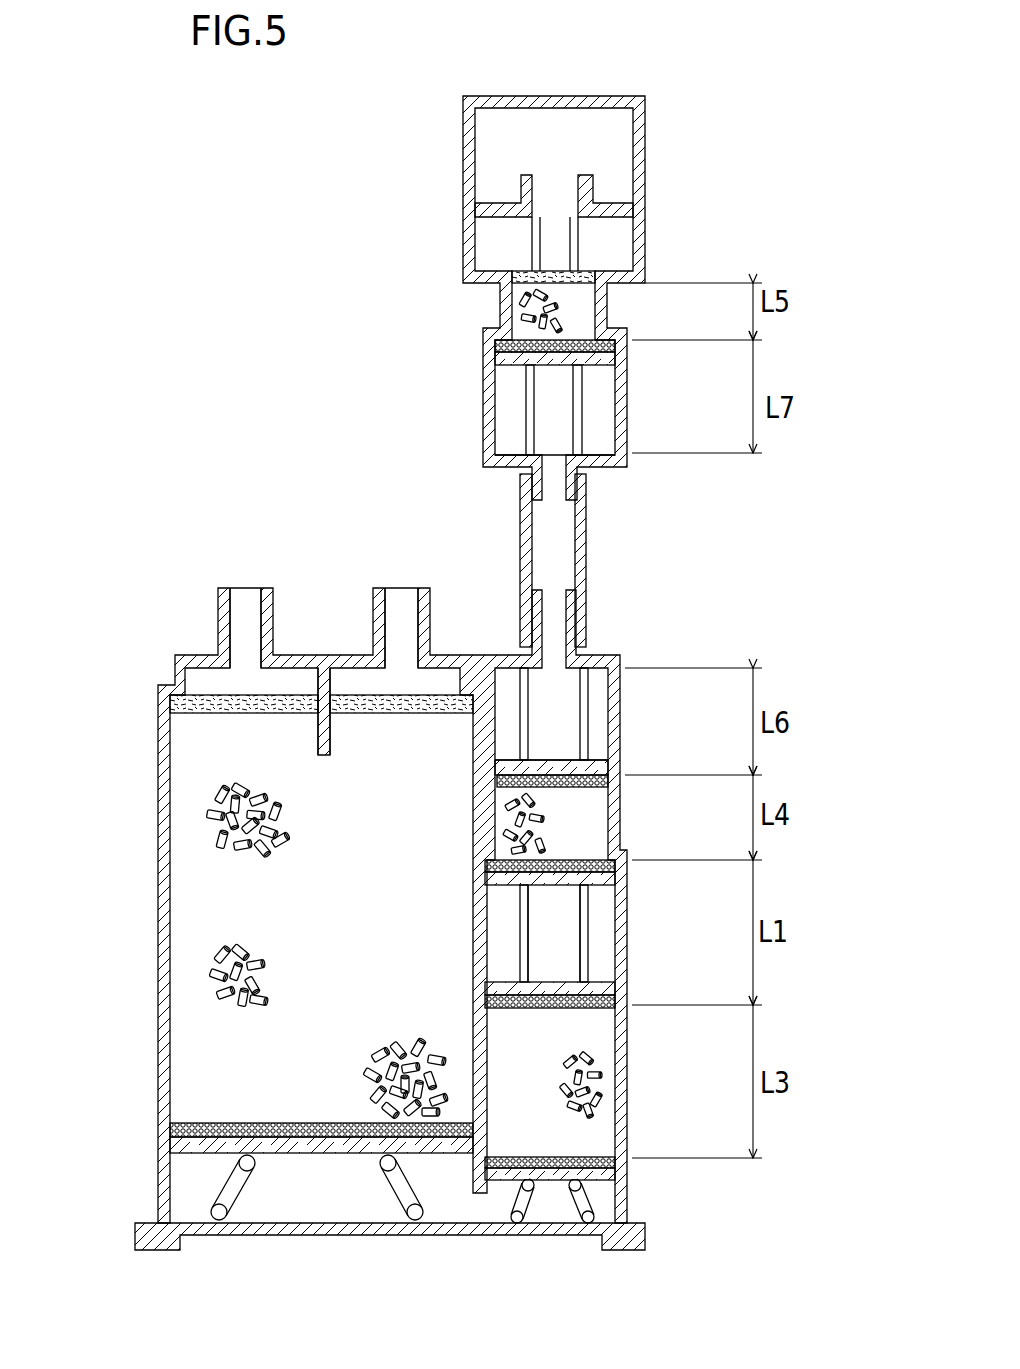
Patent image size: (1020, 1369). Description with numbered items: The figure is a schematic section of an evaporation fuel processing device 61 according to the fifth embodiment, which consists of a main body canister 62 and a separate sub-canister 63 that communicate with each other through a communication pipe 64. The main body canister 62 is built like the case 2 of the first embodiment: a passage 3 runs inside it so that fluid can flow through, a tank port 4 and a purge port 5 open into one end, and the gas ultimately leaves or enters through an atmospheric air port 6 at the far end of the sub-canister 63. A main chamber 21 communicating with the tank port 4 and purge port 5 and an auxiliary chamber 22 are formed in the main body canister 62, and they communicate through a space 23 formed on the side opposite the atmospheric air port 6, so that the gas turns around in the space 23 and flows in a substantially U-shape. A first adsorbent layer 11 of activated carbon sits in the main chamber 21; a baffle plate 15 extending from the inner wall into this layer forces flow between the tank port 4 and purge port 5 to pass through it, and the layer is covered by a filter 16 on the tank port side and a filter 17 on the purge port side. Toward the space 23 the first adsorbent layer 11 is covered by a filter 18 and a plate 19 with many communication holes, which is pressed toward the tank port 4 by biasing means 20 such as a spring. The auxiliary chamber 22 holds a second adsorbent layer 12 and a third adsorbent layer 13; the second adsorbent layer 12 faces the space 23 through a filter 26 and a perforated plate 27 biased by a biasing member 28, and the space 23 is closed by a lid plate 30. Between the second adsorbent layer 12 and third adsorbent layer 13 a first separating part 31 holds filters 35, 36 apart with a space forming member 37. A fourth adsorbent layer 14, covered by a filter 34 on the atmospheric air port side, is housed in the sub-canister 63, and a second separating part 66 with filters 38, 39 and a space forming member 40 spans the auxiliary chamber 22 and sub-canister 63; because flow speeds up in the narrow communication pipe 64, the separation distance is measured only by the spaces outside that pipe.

The case 2 is at (163, 965).
The passage 3 is at (200, 910).
The tank port 4 is at (242, 607).
The purge port 5 is at (390, 607).
The atmospheric air port 6 is at (555, 190).
The first adsorbent layer 11 is at (240, 765).
The second adsorbent layer 12 is at (583, 1045).
The third adsorbent layer 13 is at (583, 821).
The fourth adsorbent layer 14 is at (578, 300).
The baffle plate 15 is at (326, 745).
The filter 16 is at (255, 714).
The filter 17 is at (410, 714).
The filter 18 is at (283, 1124).
The plate 19 is at (326, 1124).
The biasing means 20 is at (222, 1222).
The main chamber 21 is at (196, 1089).
The auxiliary chamber 22 is at (570, 898).
The space 23 is at (355, 1205).
The filter 26 is at (615, 1160).
The plate 27 is at (615, 1176).
The biasing member 28 is at (582, 1224).
The lid plate 30 is at (457, 1237).
The first separating part 31 is at (605, 968).
The filter 34 is at (596, 270).
The filter 35 is at (490, 999).
The filter 36 is at (490, 863).
The space forming member 37 is at (588, 935).
The filter 38 is at (606, 776).
The filter 39 is at (492, 346).
The space forming member 40 is at (530, 425).
The evaporation fuel processing device 61 is at (240, 580).
The main body canister 62 is at (157, 665).
The sub-canister 63 is at (505, 94).
The communication pipe 64 is at (587, 555).
The second separating part 66 is at (598, 398).